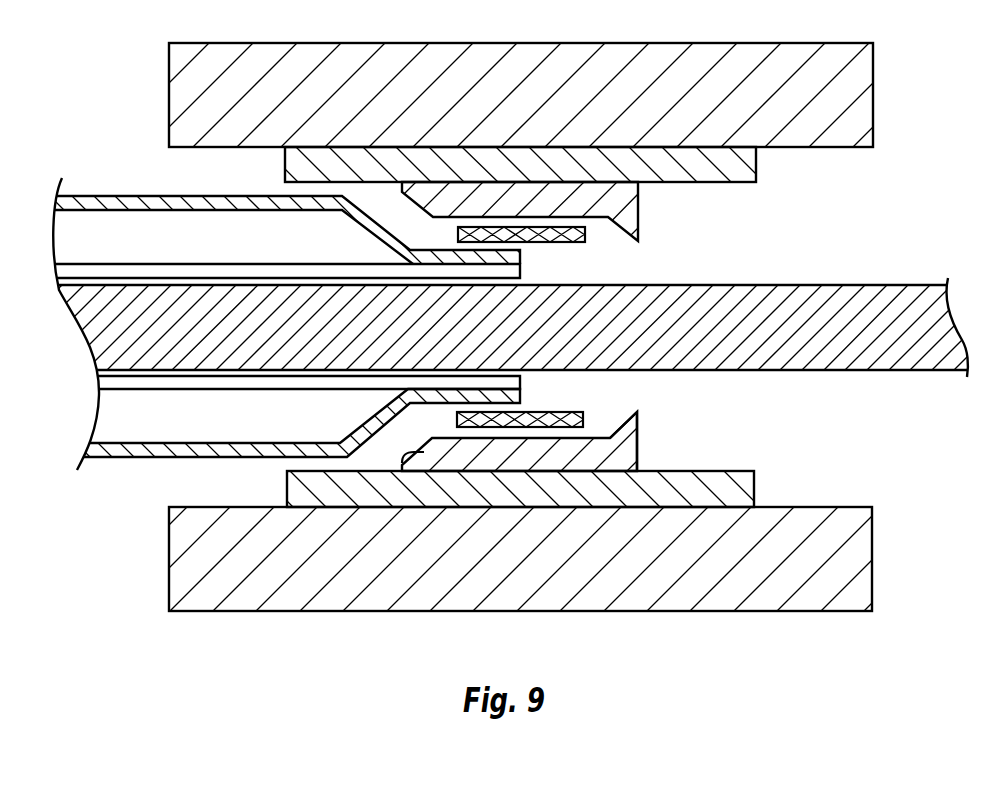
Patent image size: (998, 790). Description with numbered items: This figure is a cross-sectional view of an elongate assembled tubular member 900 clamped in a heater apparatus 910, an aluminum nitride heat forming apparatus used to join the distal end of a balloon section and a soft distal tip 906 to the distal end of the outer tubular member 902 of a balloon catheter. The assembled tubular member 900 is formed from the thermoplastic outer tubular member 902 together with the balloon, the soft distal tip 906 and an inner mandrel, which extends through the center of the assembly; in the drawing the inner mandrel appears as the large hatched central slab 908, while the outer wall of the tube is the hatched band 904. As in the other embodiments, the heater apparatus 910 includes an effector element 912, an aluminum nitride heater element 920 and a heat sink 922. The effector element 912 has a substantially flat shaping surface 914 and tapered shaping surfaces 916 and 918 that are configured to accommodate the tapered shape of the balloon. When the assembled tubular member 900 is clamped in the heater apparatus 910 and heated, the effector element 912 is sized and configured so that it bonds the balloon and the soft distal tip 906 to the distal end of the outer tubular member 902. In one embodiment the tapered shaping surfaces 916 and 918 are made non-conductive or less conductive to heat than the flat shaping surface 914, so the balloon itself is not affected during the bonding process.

The assembled tubular member 900 is at (97, 158).
The outer tubular member 902 is at (150, 270).
The outer tube wall 904 is at (230, 203).
The soft distal tip 906 is at (584, 241).
The substrate slab 908 is at (773, 303).
The heater apparatus 910 is at (897, 37).
The effector element 912 is at (623, 460).
The substantially flat shaping surface 914 is at (543, 438).
The tapered shaping surface 916 is at (403, 463).
The tapered shaping surface 918 is at (620, 421).
The aluminum nitride heater element 920 is at (753, 488).
The heat sink 922 is at (862, 554).